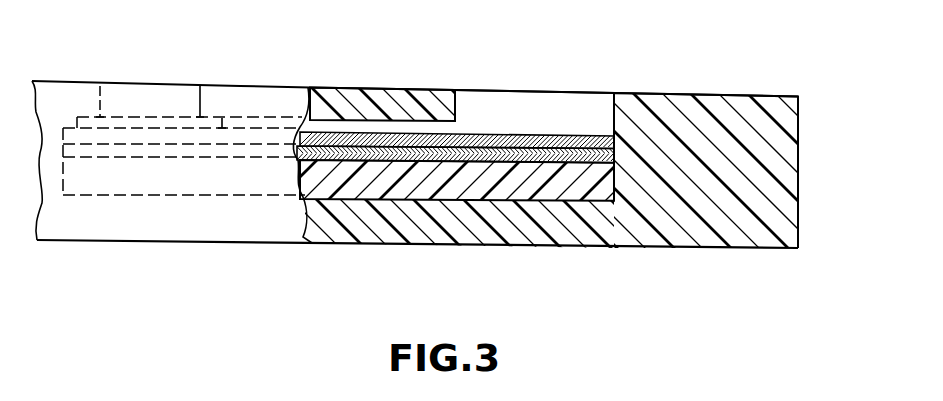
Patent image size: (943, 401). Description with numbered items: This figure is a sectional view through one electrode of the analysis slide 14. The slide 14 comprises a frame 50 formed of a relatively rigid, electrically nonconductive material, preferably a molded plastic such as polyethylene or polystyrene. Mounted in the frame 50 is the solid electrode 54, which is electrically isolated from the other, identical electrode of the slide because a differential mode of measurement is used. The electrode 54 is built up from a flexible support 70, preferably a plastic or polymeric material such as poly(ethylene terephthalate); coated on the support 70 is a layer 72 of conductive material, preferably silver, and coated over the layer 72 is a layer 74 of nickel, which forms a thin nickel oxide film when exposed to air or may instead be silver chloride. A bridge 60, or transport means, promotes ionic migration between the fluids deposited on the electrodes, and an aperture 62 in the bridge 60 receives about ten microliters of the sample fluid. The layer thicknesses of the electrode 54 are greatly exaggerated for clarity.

The analysis slide 14 is at (303, 72).
The frame 50 is at (670, 93).
The electrode 54 is at (528, 108).
The bridge 60 is at (178, 122).
The aperture 62 is at (103, 98).
The flexible support 70 is at (343, 187).
The layer of conductive material 72 is at (293, 152).
The layer of nickel 74 is at (293, 138).